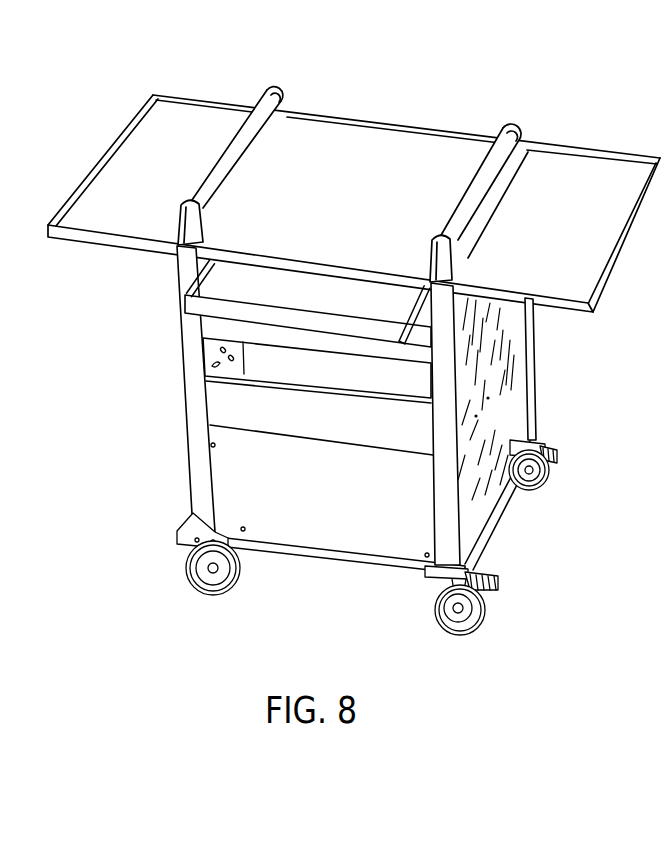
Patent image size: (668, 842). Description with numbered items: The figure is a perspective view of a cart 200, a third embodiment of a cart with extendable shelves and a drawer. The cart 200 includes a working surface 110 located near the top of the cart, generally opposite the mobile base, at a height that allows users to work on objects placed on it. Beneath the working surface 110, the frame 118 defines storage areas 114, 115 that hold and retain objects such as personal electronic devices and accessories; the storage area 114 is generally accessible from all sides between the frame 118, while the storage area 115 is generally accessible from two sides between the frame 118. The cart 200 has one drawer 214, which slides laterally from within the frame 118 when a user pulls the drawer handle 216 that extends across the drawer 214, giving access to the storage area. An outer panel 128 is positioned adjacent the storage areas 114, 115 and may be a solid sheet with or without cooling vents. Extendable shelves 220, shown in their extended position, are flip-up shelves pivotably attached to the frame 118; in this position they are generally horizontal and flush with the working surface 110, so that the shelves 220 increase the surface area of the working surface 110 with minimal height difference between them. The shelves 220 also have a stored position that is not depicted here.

The cart 200 is at (354, 339).
The working surface 110 is at (405, 142).
The extendable shelf 220 is at (192, 120).
The drawer handle 216 is at (373, 335).
The drawer 214 is at (393, 353).
The outer panel 128 is at (417, 390).
The storage area 115 is at (547, 458).
The frame 118 is at (447, 497).
The storage area 114 is at (413, 515).